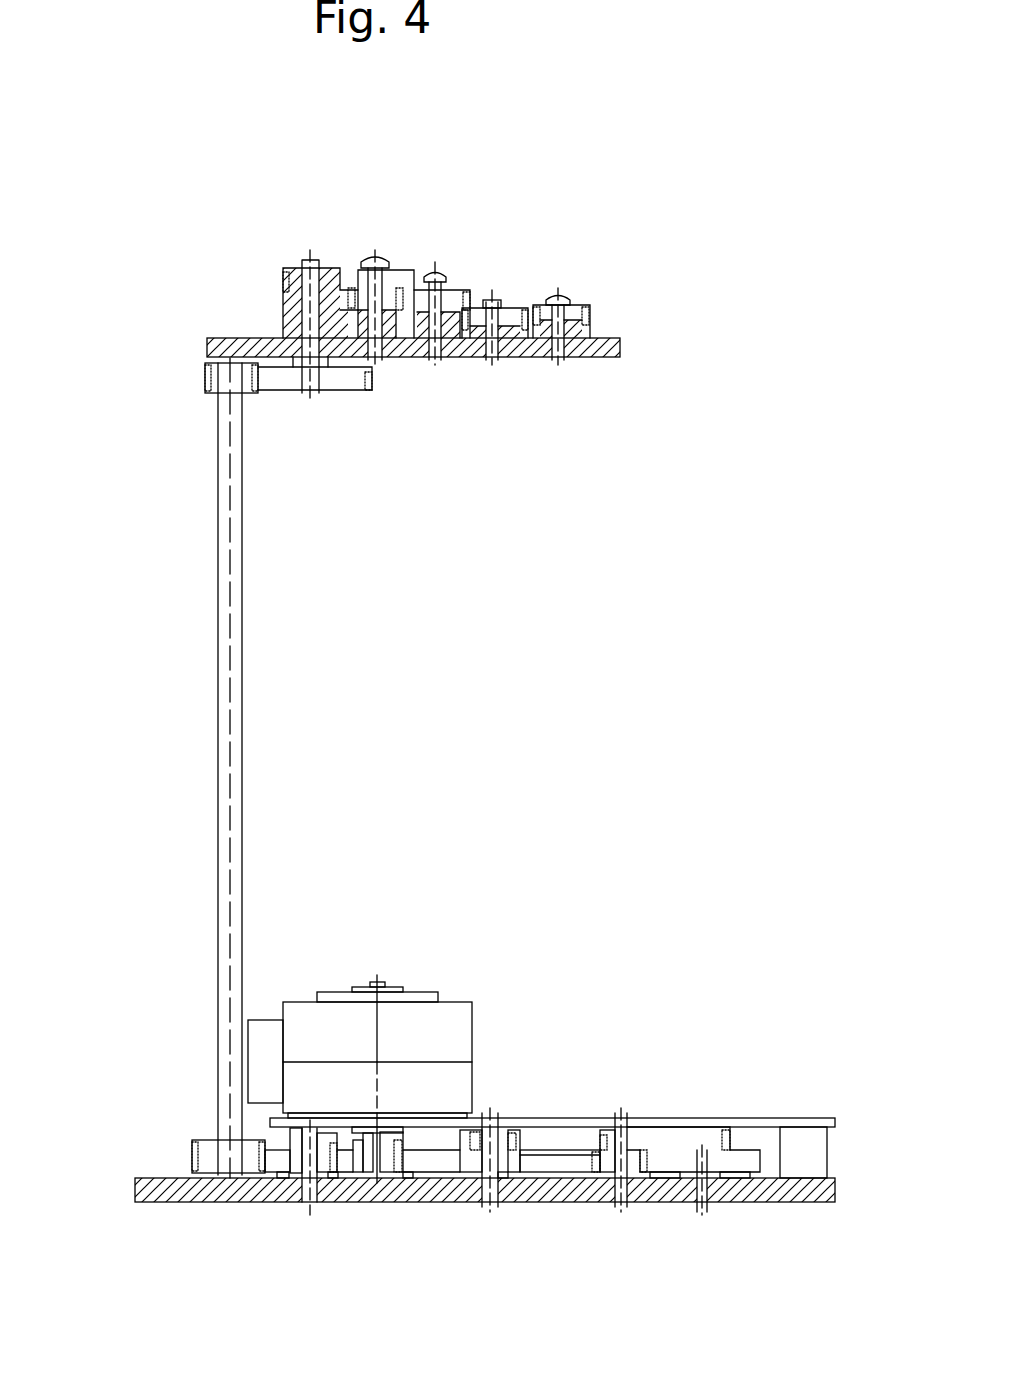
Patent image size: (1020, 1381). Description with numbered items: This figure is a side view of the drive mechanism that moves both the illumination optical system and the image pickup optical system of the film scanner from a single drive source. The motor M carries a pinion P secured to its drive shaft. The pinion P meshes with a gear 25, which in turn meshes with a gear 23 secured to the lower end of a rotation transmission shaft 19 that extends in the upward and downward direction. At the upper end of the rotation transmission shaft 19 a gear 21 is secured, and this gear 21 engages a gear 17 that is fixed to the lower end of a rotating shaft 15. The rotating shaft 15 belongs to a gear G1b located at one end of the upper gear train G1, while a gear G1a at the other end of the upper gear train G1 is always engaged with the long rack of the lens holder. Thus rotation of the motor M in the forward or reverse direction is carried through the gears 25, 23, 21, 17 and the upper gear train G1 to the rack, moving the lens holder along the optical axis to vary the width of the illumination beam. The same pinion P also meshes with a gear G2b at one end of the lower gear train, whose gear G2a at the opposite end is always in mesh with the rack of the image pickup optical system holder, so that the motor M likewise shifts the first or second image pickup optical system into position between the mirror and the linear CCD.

The rotating shaft 15 is at (300, 303).
The gear 17 is at (357, 384).
The rotation transmission shaft 19 is at (217, 740).
The gear 21 is at (205, 378).
The gear 23 is at (193, 1165).
The gear 25 is at (283, 1160).
The pinion P is at (361, 1177).
The motor M is at (455, 1035).
The upper gear train G1 is at (487, 281).
The gear G1a is at (580, 310).
The gear G1b is at (308, 265).
The gear G2a is at (706, 1230).
The gear G2b is at (552, 1165).